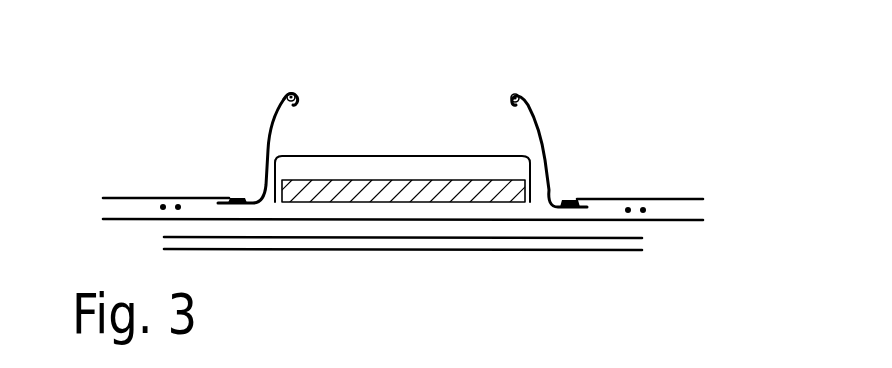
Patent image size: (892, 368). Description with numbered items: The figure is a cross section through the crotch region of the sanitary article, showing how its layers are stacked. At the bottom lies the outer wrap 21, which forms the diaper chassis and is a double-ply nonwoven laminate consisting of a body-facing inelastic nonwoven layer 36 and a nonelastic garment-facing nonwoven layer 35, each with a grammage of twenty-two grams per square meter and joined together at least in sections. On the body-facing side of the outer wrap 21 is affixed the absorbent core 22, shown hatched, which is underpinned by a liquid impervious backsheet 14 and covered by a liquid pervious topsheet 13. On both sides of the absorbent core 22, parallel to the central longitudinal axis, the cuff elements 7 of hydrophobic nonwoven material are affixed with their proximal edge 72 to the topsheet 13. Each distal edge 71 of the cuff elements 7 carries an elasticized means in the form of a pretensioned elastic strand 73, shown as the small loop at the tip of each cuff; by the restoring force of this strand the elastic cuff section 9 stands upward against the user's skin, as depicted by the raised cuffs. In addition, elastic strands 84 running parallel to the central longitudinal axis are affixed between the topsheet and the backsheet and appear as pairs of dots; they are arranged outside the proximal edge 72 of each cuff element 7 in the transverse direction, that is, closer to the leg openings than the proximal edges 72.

The cuff element 7 is at (607, 197).
The elastic cuff section 9 is at (267, 124).
The liquid pervious topsheet 13 is at (362, 155).
The liquid impervious backsheet 14 is at (327, 222).
The outer wrap 21 is at (456, 285).
The absorbent core 22 is at (430, 190).
The garment-facing nonwoven layer 35 is at (452, 252).
The body-facing inelastic nonwoven layer 36 is at (388, 240).
The distal edge 71 is at (512, 90).
The proximal edge 72 is at (571, 199).
The pretensioned elastic strand 73 is at (290, 85).
The elastic strands 84 is at (164, 204).